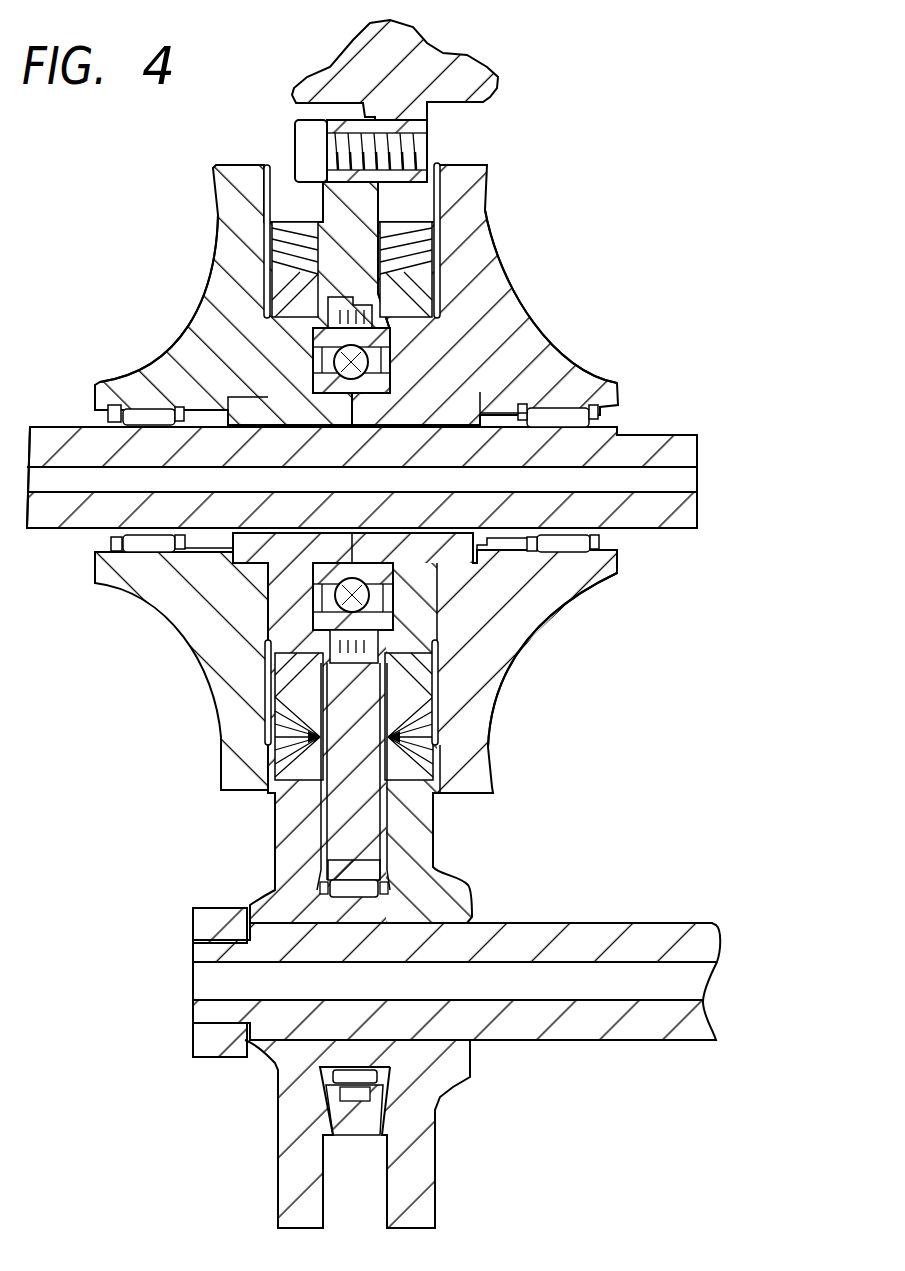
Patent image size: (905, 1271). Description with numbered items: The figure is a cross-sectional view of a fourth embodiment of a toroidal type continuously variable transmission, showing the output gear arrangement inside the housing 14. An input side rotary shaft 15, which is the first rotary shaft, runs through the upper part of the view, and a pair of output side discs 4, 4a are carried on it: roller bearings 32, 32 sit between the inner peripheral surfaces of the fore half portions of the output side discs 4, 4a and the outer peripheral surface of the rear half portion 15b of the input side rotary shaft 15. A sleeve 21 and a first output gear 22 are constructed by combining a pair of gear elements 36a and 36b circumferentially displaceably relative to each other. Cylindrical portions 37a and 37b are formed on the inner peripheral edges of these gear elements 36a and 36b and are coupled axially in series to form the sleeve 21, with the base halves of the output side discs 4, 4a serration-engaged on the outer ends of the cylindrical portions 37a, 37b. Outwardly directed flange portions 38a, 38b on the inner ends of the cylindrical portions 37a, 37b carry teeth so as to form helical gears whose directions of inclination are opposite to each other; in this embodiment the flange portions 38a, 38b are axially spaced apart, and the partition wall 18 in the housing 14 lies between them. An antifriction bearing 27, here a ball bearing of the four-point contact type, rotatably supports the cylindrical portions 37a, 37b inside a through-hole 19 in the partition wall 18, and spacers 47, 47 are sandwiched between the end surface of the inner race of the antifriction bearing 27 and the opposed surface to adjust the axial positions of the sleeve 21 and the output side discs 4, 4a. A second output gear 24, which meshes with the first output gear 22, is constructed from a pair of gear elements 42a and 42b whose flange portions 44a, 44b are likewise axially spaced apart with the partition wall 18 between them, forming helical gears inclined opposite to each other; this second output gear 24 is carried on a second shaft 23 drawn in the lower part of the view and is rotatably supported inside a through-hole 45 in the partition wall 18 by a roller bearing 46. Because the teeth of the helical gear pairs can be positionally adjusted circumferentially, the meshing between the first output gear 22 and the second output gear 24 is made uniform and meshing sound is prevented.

The housing 14 is at (450, 67).
The output side disc 4 is at (472, 190).
The conical pulley flange 4a is at (213, 240).
The first output gear 22 is at (453, 272).
The through-hole 19 is at (445, 300).
The gear element 36a is at (280, 337).
The gear element 36b is at (440, 343).
The cylindrical portion 37a is at (245, 335).
The cylindrical portion 37b is at (393, 597).
The flange portion 38a is at (283, 672).
The flange portion 38b is at (430, 365).
The roller bearing 32 is at (150, 410).
The spacer 47 is at (543, 385).
The input side rotary shaft 15 is at (640, 443).
The rear half portion 15b is at (66, 512).
The sleeve 21 is at (237, 587).
The antifriction bearing 27 is at (437, 607).
The flange portion 44b is at (420, 803).
The second output gear 24 is at (460, 833).
The partition wall 18 is at (388, 851).
The roller bearing 46 is at (365, 889).
The lower shaft 23 is at (590, 935).
The gear element 42a is at (283, 837).
The gear element 42b is at (423, 1163).
The flange portion 44a is at (290, 1158).
The through-hole 45 is at (380, 1087).